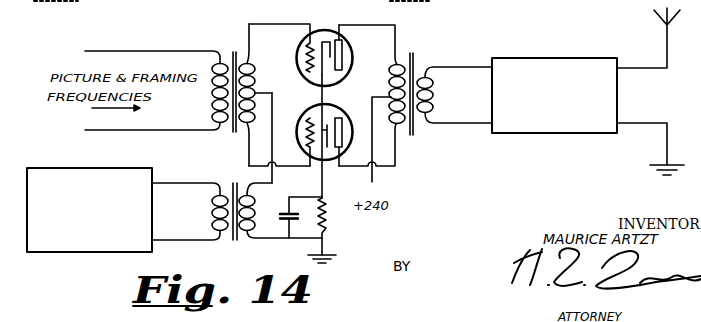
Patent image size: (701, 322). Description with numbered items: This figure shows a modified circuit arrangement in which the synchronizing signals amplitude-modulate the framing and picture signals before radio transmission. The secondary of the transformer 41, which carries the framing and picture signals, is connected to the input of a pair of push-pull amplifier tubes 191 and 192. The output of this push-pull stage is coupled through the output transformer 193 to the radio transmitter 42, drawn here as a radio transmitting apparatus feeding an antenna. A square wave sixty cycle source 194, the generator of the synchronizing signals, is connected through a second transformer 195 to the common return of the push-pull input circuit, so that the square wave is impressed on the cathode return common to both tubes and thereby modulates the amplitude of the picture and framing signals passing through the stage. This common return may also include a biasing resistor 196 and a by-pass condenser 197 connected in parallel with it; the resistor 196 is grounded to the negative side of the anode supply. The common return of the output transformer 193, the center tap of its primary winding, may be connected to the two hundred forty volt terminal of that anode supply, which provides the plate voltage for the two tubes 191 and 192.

The transformer 41 is at (233, 52).
The push-pull amplifier tube 191 is at (350, 50).
The push-pull amplifier tube 192 is at (326, 161).
The output transformer 193 is at (418, 54).
The radio transmitter 42 is at (552, 58).
The square wave 60 cycle source 194 is at (102, 168).
The transformer 195 is at (235, 182).
The biasing resistor 196 is at (327, 218).
The by-pass condenser 197 is at (289, 208).